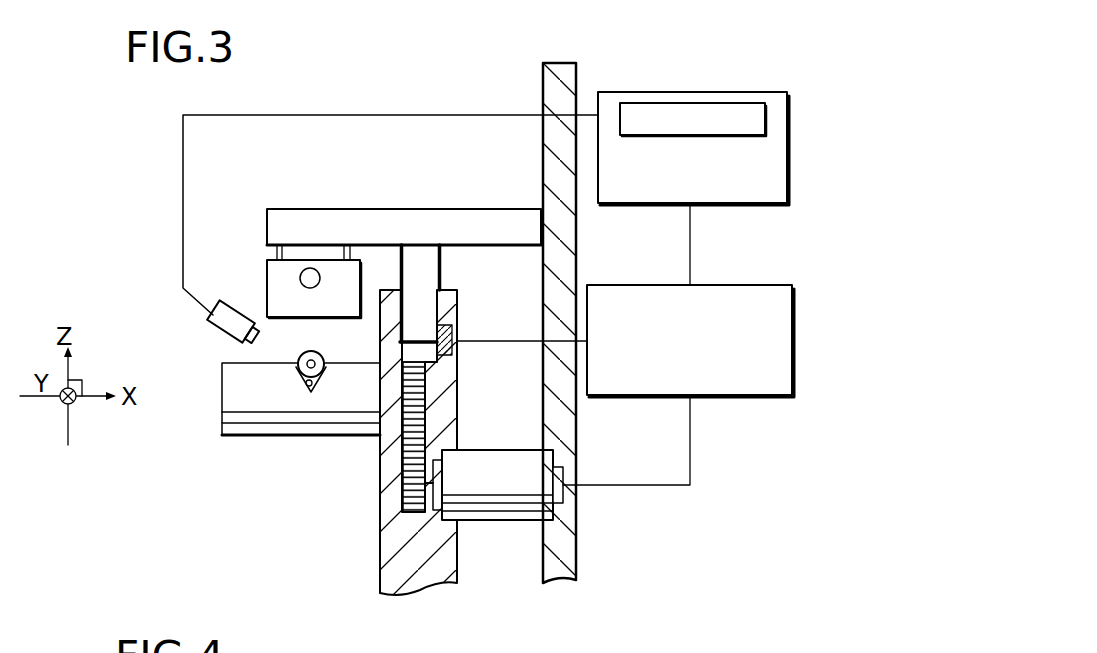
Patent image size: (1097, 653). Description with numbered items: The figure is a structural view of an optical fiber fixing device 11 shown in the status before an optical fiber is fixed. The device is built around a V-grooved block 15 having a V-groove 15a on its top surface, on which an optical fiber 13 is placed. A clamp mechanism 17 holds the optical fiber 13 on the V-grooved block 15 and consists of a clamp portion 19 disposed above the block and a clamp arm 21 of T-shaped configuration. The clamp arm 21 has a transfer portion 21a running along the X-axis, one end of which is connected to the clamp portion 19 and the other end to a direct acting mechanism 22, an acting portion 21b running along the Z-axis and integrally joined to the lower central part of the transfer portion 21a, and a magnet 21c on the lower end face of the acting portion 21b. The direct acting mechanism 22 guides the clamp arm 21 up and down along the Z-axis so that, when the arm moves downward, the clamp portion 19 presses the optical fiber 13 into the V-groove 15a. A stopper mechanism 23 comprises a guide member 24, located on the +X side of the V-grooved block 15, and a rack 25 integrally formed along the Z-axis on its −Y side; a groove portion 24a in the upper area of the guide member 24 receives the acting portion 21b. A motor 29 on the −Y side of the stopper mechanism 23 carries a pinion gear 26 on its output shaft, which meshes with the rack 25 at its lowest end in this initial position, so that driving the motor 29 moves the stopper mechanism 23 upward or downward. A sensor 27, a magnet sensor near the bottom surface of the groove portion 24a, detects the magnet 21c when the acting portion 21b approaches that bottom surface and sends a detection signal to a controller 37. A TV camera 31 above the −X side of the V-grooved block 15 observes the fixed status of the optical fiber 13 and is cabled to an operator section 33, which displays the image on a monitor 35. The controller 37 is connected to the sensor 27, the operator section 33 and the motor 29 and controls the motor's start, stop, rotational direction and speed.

The optical fiber fixing device 11 is at (370, 104).
The optical fiber 13 is at (297, 358).
The V-grooved block 15 is at (233, 418).
The V-groove 15a is at (310, 392).
The clamp mechanism 17 is at (310, 173).
The clamp portion 19 is at (270, 285).
The clamp arm 21 is at (404, 261).
The transfer portion 21a is at (445, 208).
The acting portion 21b is at (418, 273).
The magnet 21c is at (445, 358).
The direct acting mechanism 22 is at (556, 70).
The stopper mechanism 23 is at (416, 604).
The guide member 24 is at (410, 451).
The groove portion 24a is at (400, 326).
The rack 25 is at (428, 403).
The pinion gear 26 is at (397, 498).
The sensor 27 is at (445, 340).
The motor 29 is at (497, 522).
The TV camera 31 is at (206, 322).
The operator section 33 is at (731, 122).
The monitor 35 is at (692, 104).
The controller 37 is at (793, 338).